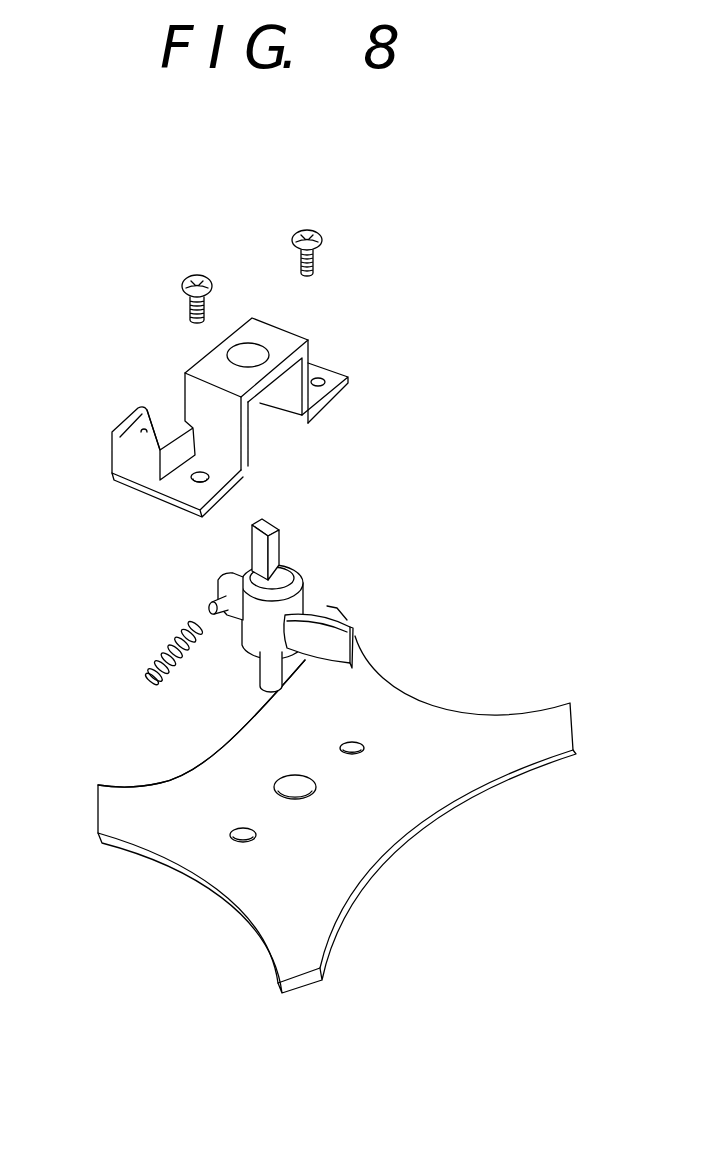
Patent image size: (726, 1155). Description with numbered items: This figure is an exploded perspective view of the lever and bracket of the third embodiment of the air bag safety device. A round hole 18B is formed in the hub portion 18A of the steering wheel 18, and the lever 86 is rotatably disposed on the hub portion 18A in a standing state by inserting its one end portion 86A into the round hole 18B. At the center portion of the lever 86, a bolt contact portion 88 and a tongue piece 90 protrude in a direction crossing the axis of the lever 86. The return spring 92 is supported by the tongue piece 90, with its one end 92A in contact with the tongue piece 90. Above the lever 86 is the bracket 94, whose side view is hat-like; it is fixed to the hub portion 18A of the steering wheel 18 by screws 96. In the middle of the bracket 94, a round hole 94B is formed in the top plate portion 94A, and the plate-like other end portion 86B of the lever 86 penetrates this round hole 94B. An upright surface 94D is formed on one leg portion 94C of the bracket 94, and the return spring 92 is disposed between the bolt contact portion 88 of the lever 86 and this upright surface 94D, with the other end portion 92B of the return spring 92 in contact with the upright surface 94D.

The steering wheel 18 is at (337, 814).
The hub portion 18A is at (408, 713).
The round hole 18B is at (297, 777).
The lever 86 is at (252, 597).
The one end portion 86A is at (265, 677).
The other end portion 86B is at (276, 530).
The bolt contact portion 88 is at (354, 622).
The tongue piece 90 is at (164, 589).
The return spring 92 is at (133, 683).
The one end 92A is at (156, 600).
The other end portion 92B is at (150, 672).
The bracket 94 is at (235, 375).
The top plate portion 94A is at (287, 347).
The round hole 94B is at (248, 354).
The leg portion 94C is at (334, 399).
The upright surface 94D is at (125, 458).
The screws 96 is at (185, 298).